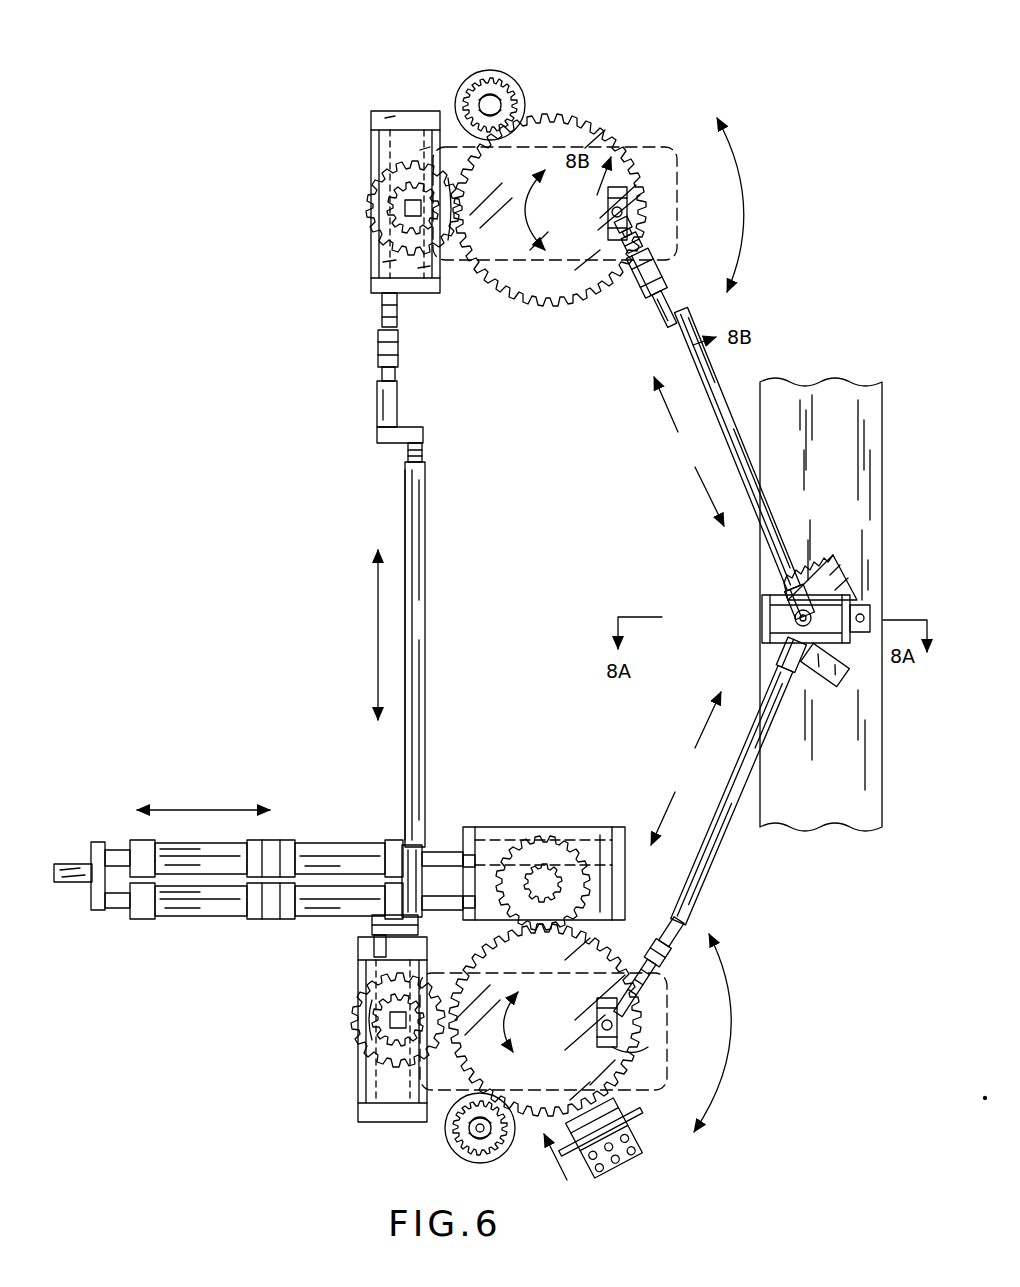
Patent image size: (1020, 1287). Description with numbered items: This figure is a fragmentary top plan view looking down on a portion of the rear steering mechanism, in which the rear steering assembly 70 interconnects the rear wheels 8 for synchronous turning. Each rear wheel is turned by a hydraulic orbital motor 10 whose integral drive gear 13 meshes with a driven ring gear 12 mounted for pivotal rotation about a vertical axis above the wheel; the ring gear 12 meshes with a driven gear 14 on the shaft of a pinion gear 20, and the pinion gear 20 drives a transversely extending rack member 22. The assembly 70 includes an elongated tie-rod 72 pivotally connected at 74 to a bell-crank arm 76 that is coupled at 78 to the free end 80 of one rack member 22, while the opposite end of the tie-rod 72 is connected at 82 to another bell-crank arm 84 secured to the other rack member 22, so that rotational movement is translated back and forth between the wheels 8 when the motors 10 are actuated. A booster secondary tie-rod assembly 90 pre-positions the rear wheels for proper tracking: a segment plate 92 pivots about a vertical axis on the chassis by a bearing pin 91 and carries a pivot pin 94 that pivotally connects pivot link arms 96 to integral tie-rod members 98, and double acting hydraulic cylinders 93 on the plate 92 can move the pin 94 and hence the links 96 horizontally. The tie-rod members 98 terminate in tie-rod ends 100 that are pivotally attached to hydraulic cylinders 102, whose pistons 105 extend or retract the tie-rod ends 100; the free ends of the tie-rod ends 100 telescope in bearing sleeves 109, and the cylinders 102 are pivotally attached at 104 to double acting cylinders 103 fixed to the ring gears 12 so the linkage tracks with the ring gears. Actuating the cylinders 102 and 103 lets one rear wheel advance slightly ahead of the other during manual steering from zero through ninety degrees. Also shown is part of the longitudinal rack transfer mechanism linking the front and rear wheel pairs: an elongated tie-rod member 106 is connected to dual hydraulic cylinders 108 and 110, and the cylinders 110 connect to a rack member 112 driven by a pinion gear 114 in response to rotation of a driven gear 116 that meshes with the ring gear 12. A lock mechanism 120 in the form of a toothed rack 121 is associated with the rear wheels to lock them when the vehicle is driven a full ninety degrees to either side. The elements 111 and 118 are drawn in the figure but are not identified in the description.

The rear wheel 8 is at (640, 148).
The hydraulic orbital motor 10 is at (483, 76).
The ring gear 12 is at (577, 130).
The drive gear 13 is at (483, 1150).
The driven gear 14 is at (449, 190).
The pinion gear 20 is at (395, 192).
The rack member 22 is at (375, 255).
The rear steering assembly 70 is at (397, 516).
The tie-rod 72 is at (426, 623).
The pivotal connection 74 is at (424, 454).
The bell-crank arm 76 is at (398, 396).
The coupling 78 is at (378, 356).
The free end of rack member 80 is at (398, 313).
The connection 82 is at (400, 876).
The bell-crank arm 84 is at (375, 929).
The booster secondary tie-rod assembly 90 is at (755, 622).
The bearing pin 91 is at (866, 608).
The segment plate 92 is at (850, 586).
The double acting hydraulic cylinder 93 is at (833, 553).
The pivot pin 94 is at (812, 626).
The pivot link arm 96 is at (778, 595).
The tie-rod member 98 is at (758, 456).
The tie-rod end 100 is at (664, 314).
The hydraulic cylinder 102 is at (645, 262).
The double acting cylinder 103 is at (625, 1055).
The pivotal attachment 104 is at (610, 228).
The piston 105 is at (664, 286).
The tie-rod member 106 is at (75, 883).
The hydraulic cylinder 108 is at (208, 896).
The bearing sleeve 109 is at (632, 236).
The hydraulic cylinder 110 is at (165, 856).
The joint block 111 is at (627, 226).
The rack member 112 is at (490, 836).
The pinion gear 114 is at (522, 836).
The driven gear 116 is at (560, 836).
The end plate 118 is at (601, 830).
The lock mechanism 120 is at (615, 1166).
The toothed rack 121 is at (640, 1119).